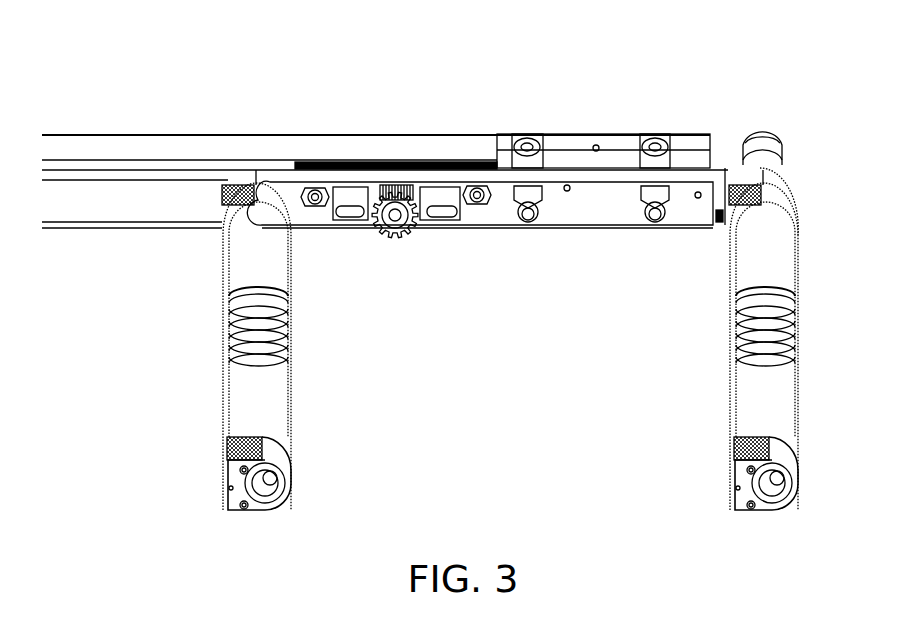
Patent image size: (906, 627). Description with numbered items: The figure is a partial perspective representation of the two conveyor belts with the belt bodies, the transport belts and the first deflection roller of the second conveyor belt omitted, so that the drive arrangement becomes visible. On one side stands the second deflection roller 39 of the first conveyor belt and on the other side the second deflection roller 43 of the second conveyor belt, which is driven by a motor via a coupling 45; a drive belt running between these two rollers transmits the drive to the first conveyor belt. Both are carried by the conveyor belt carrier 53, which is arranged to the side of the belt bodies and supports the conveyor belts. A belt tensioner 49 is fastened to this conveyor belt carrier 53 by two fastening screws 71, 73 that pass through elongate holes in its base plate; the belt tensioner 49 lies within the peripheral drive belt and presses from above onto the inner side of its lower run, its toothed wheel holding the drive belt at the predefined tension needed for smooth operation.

The second deflection roller 39 is at (248, 263).
The second deflection roller 43 is at (763, 390).
The coupling 45 is at (762, 128).
The belt tensioner 49 is at (418, 245).
The conveyor belt carrier 53 is at (139, 148).
The fastening screw 71 is at (315, 198).
The fastening screw 73 is at (477, 198).